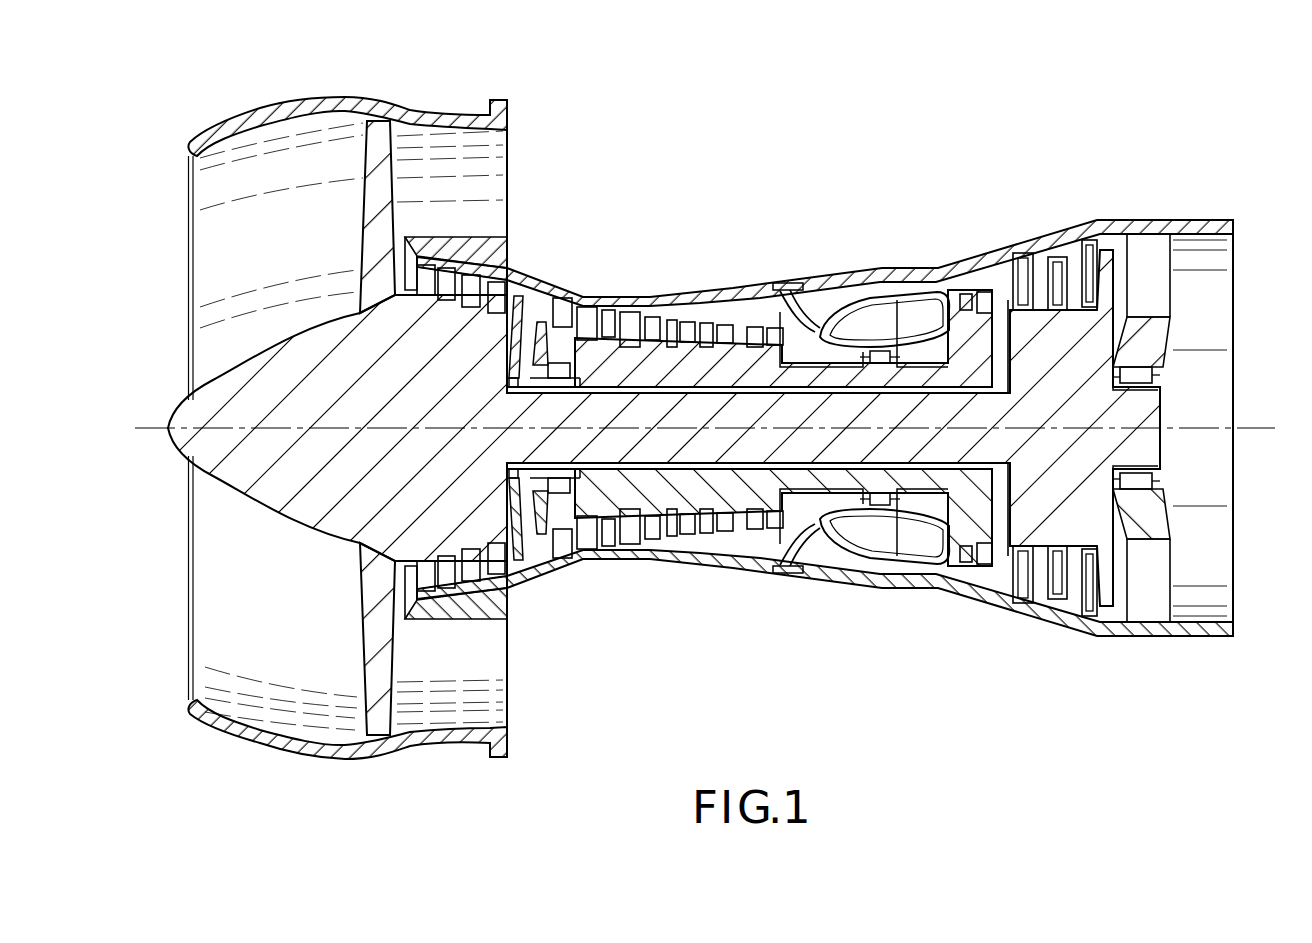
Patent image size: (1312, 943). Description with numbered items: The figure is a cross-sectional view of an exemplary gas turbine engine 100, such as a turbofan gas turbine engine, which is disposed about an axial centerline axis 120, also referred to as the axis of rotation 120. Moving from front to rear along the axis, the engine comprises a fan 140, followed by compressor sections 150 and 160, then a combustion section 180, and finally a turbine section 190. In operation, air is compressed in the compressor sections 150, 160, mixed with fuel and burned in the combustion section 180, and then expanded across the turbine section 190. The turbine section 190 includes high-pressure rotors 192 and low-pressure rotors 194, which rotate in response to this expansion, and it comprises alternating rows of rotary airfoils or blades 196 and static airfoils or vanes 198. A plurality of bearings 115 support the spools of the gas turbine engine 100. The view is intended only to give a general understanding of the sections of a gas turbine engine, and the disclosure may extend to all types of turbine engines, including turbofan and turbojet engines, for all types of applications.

The gas turbine engine 100 is at (958, 148).
The bearings 115 is at (560, 363).
The axial centerline axis 120 is at (149, 428).
The fan 140 is at (393, 173).
The compressor section 150 is at (402, 768).
The compressor section 160 is at (575, 578).
The combustion section 180 is at (805, 600).
The turbine section 190 is at (987, 648).
The high-pressure rotors 192 is at (981, 300).
The low-pressure rotors 194 is at (1100, 336).
The blades 196 is at (1043, 267).
The vanes 198 is at (1058, 253).